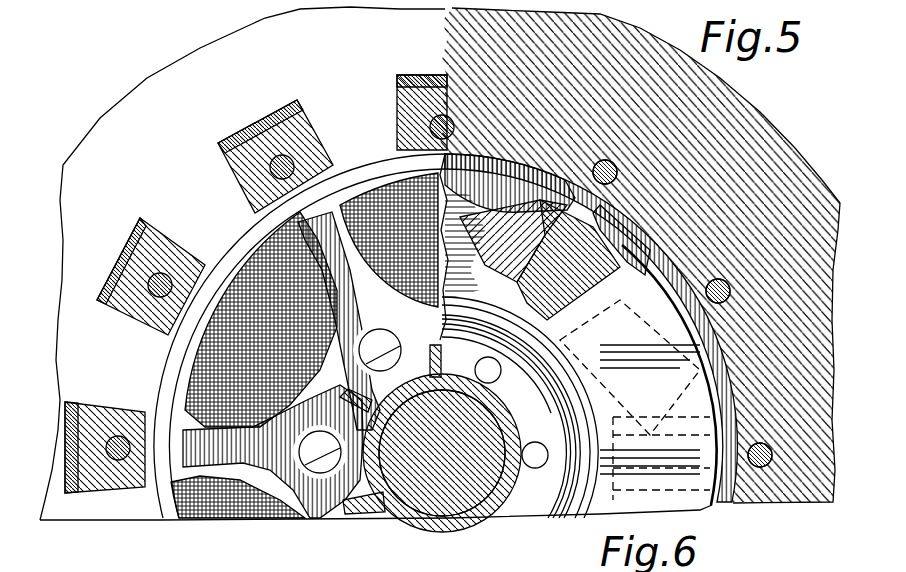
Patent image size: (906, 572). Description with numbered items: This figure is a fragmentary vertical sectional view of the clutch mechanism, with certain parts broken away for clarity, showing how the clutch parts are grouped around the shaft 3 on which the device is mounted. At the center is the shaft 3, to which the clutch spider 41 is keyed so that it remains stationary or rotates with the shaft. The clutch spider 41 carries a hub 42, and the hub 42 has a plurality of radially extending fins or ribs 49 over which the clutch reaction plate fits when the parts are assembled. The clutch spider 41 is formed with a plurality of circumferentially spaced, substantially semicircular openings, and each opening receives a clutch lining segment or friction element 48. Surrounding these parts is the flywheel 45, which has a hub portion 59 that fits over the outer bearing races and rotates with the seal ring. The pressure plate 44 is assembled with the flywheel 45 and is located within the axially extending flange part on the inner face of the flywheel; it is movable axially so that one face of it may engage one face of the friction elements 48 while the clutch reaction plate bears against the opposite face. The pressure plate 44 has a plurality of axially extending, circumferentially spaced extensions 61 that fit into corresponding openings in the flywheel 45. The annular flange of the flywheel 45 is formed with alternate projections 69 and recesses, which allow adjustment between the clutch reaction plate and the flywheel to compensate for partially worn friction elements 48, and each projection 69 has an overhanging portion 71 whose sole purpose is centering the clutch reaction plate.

The shaft 3 is at (446, 505).
The clutch spider 41 is at (325, 500).
The hub 42 is at (495, 510).
The pressure plate 44 is at (587, 510).
The flywheel 45 is at (776, 128).
The friction element 48 is at (232, 280).
The fins or ribs 49 is at (362, 510).
The hub portion 59 is at (555, 500).
The extensions 61 is at (553, 402).
The projections 69 is at (305, 126).
The overhanging portion 71 is at (281, 104).